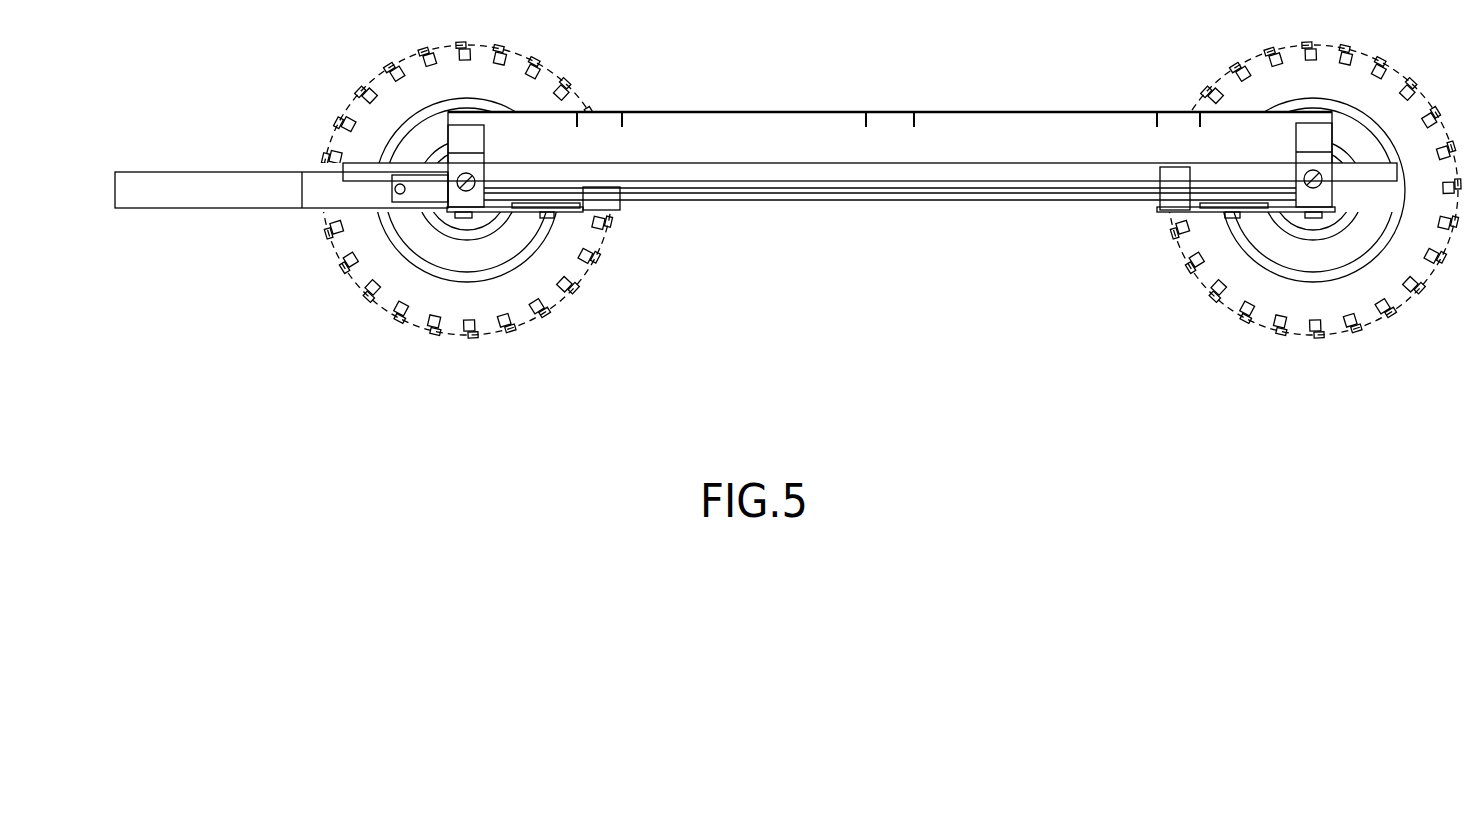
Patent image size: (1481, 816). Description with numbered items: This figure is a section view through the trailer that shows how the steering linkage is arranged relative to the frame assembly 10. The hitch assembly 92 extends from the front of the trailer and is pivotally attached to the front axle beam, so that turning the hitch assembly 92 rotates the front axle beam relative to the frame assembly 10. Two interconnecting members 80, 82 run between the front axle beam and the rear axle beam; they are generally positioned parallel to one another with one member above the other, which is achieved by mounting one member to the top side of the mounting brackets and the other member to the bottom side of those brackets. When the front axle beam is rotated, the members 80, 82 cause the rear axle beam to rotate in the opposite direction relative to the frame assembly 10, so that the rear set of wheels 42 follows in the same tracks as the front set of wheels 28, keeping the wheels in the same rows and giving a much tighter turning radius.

The frame assembly 10 is at (755, 95).
The front set of wheels 28 is at (405, 318).
The rear set of wheels 42 is at (1360, 325).
The member 80 is at (732, 200).
The member 82 is at (985, 163).
The hitch assembly 92 is at (197, 212).